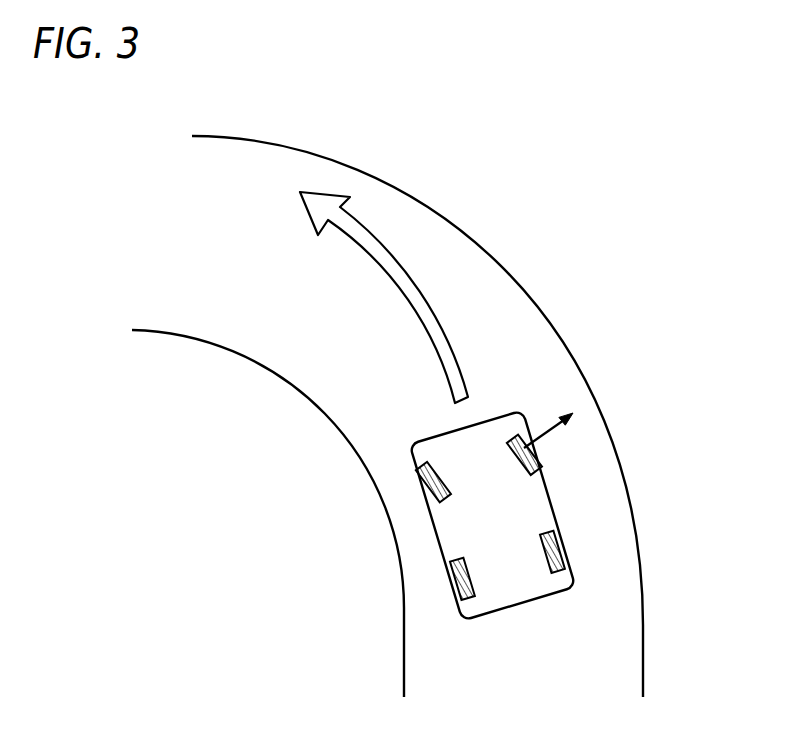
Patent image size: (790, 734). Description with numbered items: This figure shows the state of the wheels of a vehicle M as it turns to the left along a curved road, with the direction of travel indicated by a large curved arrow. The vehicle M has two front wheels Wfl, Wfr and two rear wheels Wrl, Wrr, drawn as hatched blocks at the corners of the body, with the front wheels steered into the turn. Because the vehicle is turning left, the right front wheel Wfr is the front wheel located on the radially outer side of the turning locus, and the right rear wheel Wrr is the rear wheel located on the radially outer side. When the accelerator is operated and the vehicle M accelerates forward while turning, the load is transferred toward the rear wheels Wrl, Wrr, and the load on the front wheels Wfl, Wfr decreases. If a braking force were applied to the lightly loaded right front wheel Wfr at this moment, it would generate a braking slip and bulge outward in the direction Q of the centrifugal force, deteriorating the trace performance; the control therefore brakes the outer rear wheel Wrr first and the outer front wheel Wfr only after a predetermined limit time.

The vehicle M is at (553, 502).
The left front wheel Wfl is at (416, 478).
The right front wheel Wfr is at (526, 438).
The left rear wheel Wrl is at (452, 583).
The right rear wheel Wrr is at (568, 547).
The direction of centrifugal force Q is at (553, 418).